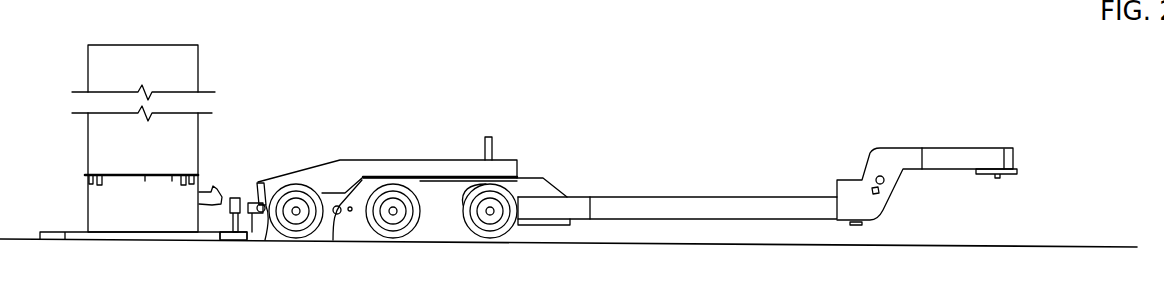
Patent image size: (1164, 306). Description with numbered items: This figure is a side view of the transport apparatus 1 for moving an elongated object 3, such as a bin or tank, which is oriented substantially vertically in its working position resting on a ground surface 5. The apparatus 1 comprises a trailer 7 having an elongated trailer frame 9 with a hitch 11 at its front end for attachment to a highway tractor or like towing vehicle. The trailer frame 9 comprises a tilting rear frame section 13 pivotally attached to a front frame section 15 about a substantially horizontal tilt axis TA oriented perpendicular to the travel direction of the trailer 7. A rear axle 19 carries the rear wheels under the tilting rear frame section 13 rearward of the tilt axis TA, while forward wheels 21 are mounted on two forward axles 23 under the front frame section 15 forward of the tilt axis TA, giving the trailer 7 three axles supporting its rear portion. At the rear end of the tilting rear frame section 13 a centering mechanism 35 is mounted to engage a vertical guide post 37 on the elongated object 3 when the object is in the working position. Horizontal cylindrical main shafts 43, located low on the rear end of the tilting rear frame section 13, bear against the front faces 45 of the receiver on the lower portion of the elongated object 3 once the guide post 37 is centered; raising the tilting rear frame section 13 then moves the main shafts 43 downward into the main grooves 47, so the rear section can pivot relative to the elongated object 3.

The transport apparatus 1 is at (375, 127).
The elongated object 3 is at (199, 70).
The ground surface 5 is at (1097, 247).
The trailer 7 is at (821, 132).
The trailer frame 9 is at (640, 197).
The hitch 11 is at (1004, 176).
The tilting rear frame section 13 is at (505, 160).
The front frame section 15 is at (600, 197).
The rear axle 19 is at (296, 214).
The forward wheels 21 is at (510, 231).
The forward axles 23 is at (398, 220).
The centering mechanism 35 is at (252, 216).
The vertical guide post 37 is at (236, 197).
The main shafts 43 is at (265, 184).
The front faces 45 is at (212, 206).
The main grooves 47 is at (226, 235).
The tilt axis TA is at (340, 216).